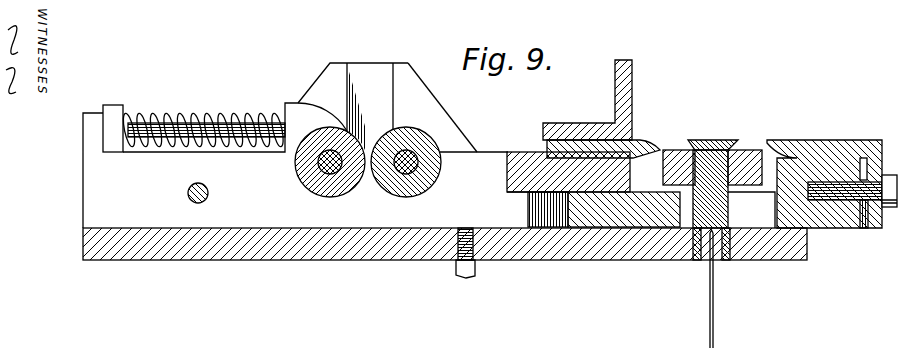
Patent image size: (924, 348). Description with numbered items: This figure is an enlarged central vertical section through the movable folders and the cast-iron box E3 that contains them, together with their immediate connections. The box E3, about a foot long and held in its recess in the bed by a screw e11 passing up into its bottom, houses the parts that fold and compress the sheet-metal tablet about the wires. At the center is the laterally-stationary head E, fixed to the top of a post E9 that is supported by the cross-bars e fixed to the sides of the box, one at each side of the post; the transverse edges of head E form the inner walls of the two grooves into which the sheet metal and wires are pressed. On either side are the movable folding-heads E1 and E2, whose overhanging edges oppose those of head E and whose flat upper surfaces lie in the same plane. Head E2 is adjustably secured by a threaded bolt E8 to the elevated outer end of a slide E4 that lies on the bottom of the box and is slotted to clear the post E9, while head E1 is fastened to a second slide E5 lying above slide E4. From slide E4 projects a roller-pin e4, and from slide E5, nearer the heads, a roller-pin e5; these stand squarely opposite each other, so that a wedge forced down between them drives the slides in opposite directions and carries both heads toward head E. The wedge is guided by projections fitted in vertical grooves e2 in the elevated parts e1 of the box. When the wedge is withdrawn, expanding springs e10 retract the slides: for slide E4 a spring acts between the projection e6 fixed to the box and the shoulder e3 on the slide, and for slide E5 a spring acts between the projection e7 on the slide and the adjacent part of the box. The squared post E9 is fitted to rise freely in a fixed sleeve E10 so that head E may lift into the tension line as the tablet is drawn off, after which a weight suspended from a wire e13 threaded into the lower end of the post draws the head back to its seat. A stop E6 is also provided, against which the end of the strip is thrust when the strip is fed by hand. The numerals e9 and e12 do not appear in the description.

The laterally-stationary head E is at (652, 138).
The movable folding-head E1 is at (642, 147).
The movable folding-head E2 is at (824, 176).
The box E3 is at (445, 244).
The slide E4 is at (381, 145).
The second slide E5 is at (568, 172).
The stop E6 is at (587, 100).
The threaded bolt E8 is at (859, 201).
The post E9 is at (710, 189).
The fixed sleeve E10 is at (726, 261).
The cross-bars e is at (712, 161).
The elevated parts e1 is at (442, 107).
The vertical grooves e2 is at (361, 107).
The projection or shoulder e3 is at (322, 117).
The roller-pin e4 is at (330, 162).
The roller-pin e5 is at (406, 162).
The projection e6 is at (113, 128).
The projection e7 is at (210, 193).
The coil spring e9 is at (178, 119).
The expanding spring e10 is at (206, 116).
The screw e11 is at (475, 271).
The cavity e12 is at (751, 210).
The wire e13 is at (723, 289).